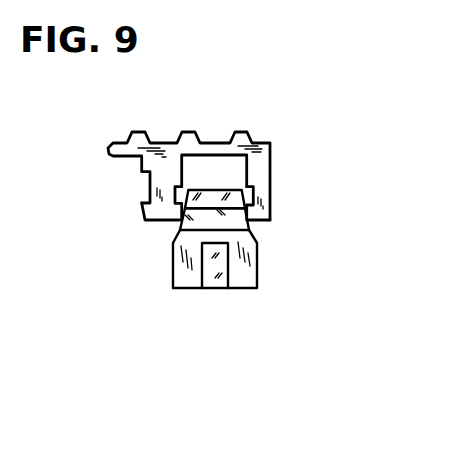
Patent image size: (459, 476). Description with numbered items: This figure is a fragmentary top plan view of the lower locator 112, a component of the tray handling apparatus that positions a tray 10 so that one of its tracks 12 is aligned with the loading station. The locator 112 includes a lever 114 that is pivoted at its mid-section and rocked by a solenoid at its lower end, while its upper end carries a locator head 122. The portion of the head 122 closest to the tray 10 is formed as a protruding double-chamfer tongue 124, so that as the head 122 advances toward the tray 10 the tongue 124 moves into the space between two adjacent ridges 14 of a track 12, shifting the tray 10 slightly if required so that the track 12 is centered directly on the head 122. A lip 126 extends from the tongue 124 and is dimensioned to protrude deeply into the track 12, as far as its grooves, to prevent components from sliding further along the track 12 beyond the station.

The tray 10 is at (116, 157).
The track 12 is at (221, 157).
The ridge 14 is at (160, 222).
The lower locator 112 is at (216, 256).
The lever 114 is at (222, 289).
The locator head 122 is at (257, 271).
The double-chamfer tongue 124 is at (240, 219).
The lip 126 is at (221, 189).